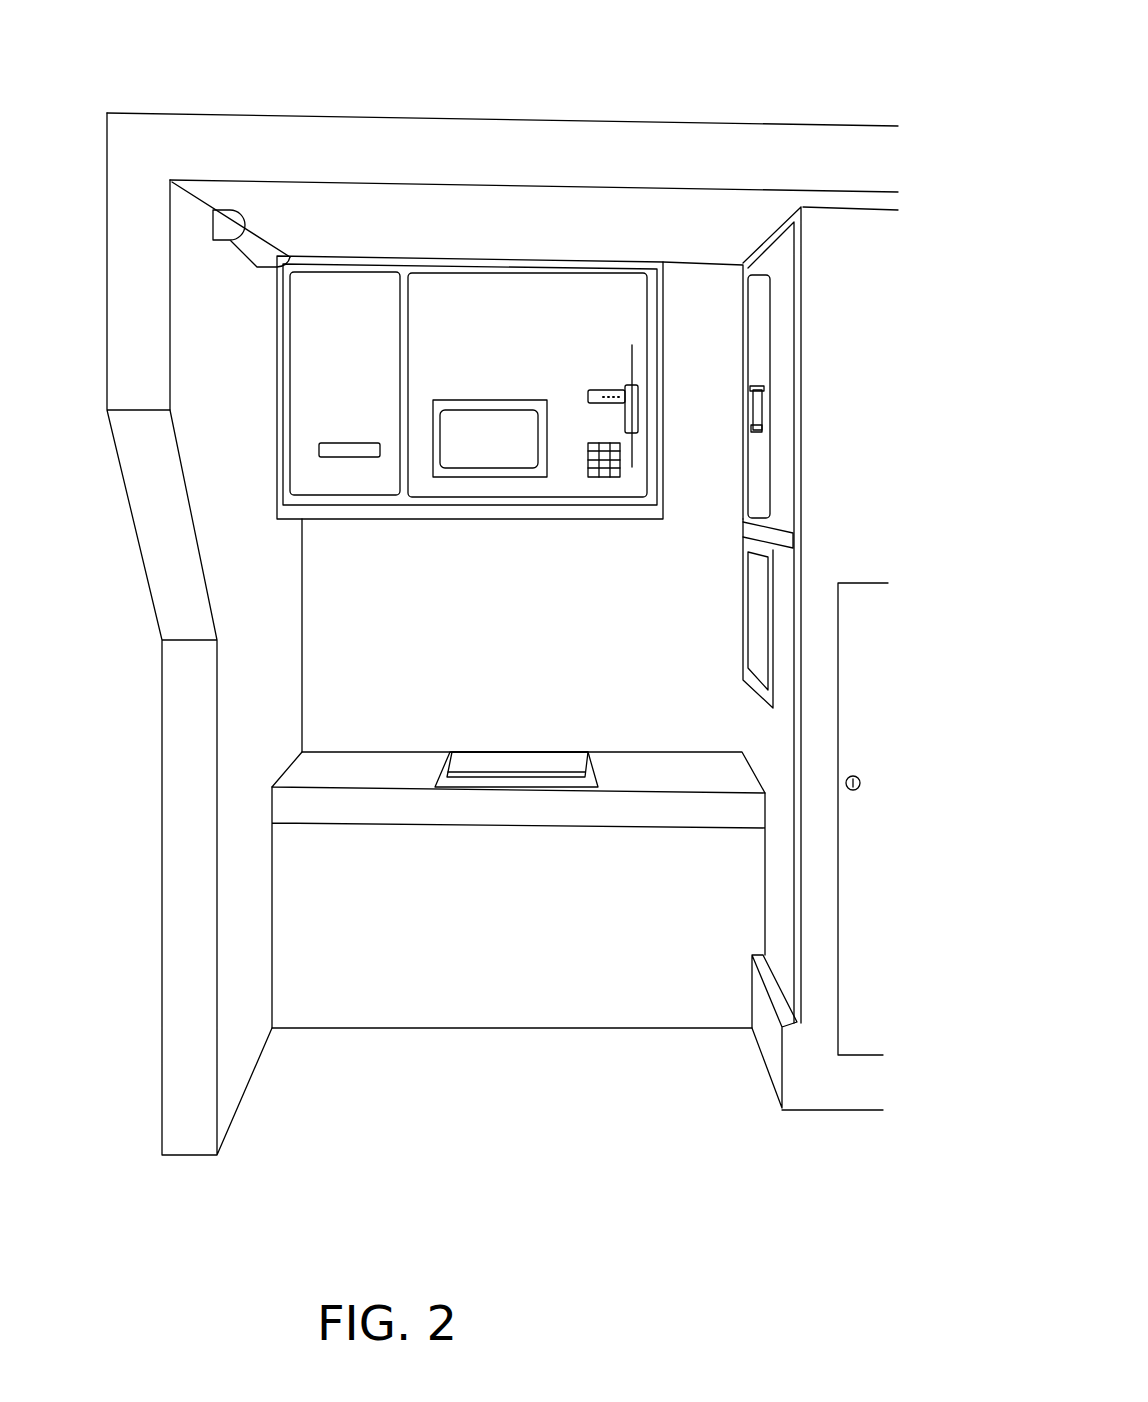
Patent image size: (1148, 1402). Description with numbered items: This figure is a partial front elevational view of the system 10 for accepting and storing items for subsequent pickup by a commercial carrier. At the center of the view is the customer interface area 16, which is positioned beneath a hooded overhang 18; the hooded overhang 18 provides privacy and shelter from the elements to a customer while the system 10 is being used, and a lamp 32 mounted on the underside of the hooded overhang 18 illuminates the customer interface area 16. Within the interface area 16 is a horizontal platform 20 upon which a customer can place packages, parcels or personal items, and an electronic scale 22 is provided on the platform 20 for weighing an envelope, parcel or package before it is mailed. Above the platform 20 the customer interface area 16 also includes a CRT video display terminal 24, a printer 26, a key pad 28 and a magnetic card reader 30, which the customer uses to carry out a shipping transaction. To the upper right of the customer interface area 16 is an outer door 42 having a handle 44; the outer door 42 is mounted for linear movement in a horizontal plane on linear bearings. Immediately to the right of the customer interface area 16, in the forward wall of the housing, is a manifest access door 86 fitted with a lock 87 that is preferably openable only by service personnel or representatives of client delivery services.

The system 10 is at (187, 100).
The customer interface area 16 is at (588, 245).
The hooded overhang 18 is at (383, 184).
The horizontal platform 20 is at (683, 752).
The electronic scale 22 is at (508, 752).
The CRT video display terminal 24 is at (497, 403).
The printer 26 is at (360, 443).
The key pad 28 is at (593, 478).
The magnetic card reader 30 is at (623, 380).
The lamp 32 is at (242, 222).
The outer door 42 is at (770, 343).
The handle 44 is at (753, 432).
The manifest access door 86 is at (869, 1058).
The lock 87 is at (855, 790).